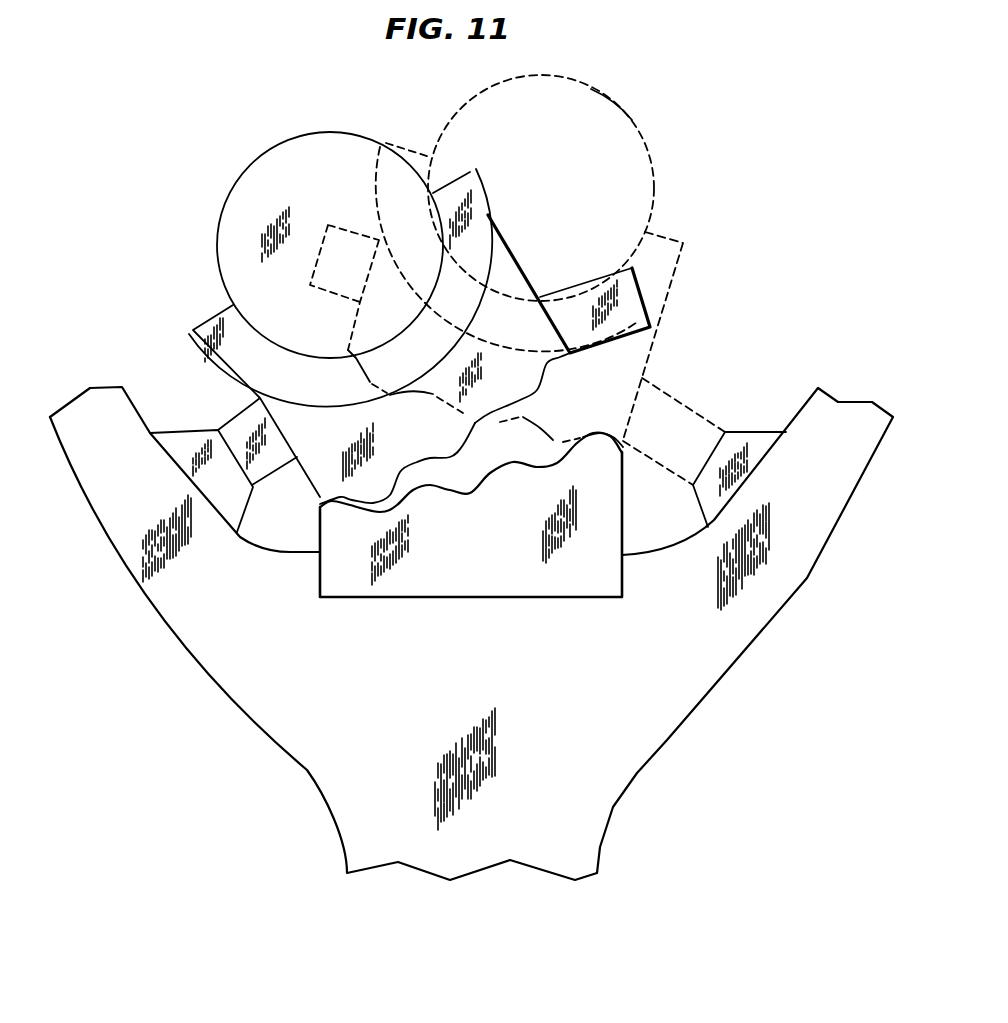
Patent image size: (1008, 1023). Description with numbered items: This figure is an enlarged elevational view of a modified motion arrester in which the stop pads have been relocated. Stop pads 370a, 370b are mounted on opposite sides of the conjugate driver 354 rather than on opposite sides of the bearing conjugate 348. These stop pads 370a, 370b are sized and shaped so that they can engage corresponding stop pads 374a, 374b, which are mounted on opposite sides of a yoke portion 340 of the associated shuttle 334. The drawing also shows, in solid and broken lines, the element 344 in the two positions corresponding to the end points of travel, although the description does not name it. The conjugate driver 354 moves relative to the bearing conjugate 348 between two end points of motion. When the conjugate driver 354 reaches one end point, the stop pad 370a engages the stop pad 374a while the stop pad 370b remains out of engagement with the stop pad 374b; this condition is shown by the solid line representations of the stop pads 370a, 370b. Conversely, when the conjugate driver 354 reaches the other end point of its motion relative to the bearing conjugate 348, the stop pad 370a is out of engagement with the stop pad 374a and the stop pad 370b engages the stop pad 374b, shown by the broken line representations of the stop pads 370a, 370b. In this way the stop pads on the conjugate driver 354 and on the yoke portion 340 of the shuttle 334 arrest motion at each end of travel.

The shuttle 334 is at (672, 786).
The yoke portion 340 is at (233, 675).
The rotor 344 is at (247, 177).
The bearing conjugate 348 is at (453, 580).
The conjugate driver 354 is at (658, 353).
The stop pad 370a is at (247, 418).
The stop pad 370b is at (569, 285).
The stop pad 374a is at (192, 437).
The stop pad 374b is at (767, 438).